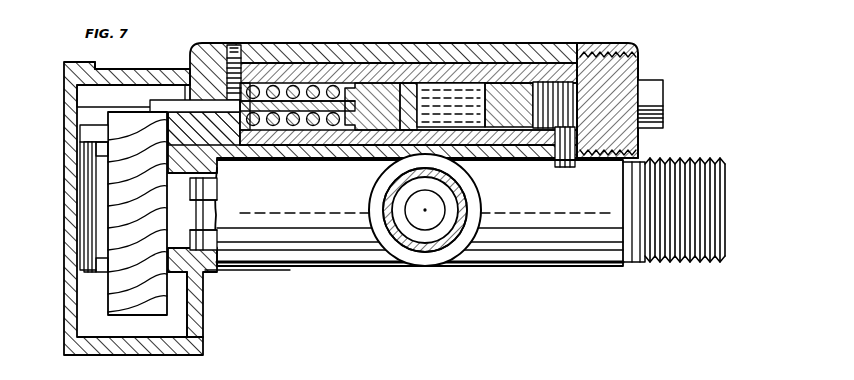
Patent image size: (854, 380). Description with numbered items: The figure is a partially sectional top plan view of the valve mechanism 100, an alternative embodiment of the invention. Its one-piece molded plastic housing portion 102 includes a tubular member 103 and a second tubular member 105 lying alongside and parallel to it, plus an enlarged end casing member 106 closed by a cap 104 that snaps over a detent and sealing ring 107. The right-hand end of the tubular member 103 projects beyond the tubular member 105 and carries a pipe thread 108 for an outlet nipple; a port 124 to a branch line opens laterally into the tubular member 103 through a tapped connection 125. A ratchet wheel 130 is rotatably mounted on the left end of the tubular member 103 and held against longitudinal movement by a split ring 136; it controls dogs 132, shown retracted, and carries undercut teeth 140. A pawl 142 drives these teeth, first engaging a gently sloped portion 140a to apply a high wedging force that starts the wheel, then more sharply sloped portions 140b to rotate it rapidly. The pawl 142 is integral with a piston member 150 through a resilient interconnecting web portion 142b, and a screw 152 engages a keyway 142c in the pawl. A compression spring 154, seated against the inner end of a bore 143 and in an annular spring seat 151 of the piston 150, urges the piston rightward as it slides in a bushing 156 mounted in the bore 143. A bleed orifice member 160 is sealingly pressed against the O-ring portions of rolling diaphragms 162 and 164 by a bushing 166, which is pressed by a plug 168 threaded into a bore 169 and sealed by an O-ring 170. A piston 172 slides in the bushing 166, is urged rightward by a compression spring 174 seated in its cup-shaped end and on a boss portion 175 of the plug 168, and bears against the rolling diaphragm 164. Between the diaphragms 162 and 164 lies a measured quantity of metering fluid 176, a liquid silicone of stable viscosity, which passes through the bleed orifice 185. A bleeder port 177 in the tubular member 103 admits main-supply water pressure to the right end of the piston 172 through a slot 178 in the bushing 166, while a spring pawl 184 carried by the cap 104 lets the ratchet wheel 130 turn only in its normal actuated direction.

The valve mechanism 100 is at (507, 278).
The housing portion 102 is at (292, 268).
The tubular member 103 is at (554, 272).
The cap 104 is at (72, 331).
The second tubular member 105 is at (284, 42).
The enlarged end casing member 106 is at (207, 318).
The detent and sealing ring 107 is at (84, 68).
The pipe thread 108 is at (676, 264).
The port 124 is at (420, 230).
The tapped connection 125 is at (452, 258).
The ratchet wheel 130 is at (108, 290).
The dogs 132 is at (215, 211).
The split ring 136 is at (82, 197).
The undercut teeth 140 is at (116, 244).
The gently sloped portion 140a is at (104, 134).
The more sharply sloped portions 140b is at (108, 176).
The pawl 142 is at (184, 78).
The resilient interconnecting web portion 142b is at (194, 130).
The keyway 142c is at (250, 158).
The bore 143 is at (553, 65).
The piston member 150 is at (372, 106).
The annular spring seat 151 is at (328, 165).
The screw 152 is at (236, 48).
The compression spring 154 is at (312, 68).
The bushing 156 is at (330, 68).
The bleed orifice member 160 is at (405, 60).
The rolling diaphragm 162 is at (376, 160).
The rolling diaphragm 164 is at (478, 70).
The bushing 166 is at (510, 64).
The plug 168 is at (666, 100).
The bore 169 is at (634, 61).
The O-ring 170 is at (582, 62).
The piston 172 is at (509, 105).
The compression spring 174 is at (587, 85).
The boss portion 175 is at (587, 107).
The metering fluid 176 is at (451, 105).
The bleeder port 177 is at (560, 168).
The slot 178 is at (584, 131).
The spring pawl 184 is at (86, 128).
The bleed orifice 185 is at (408, 64).